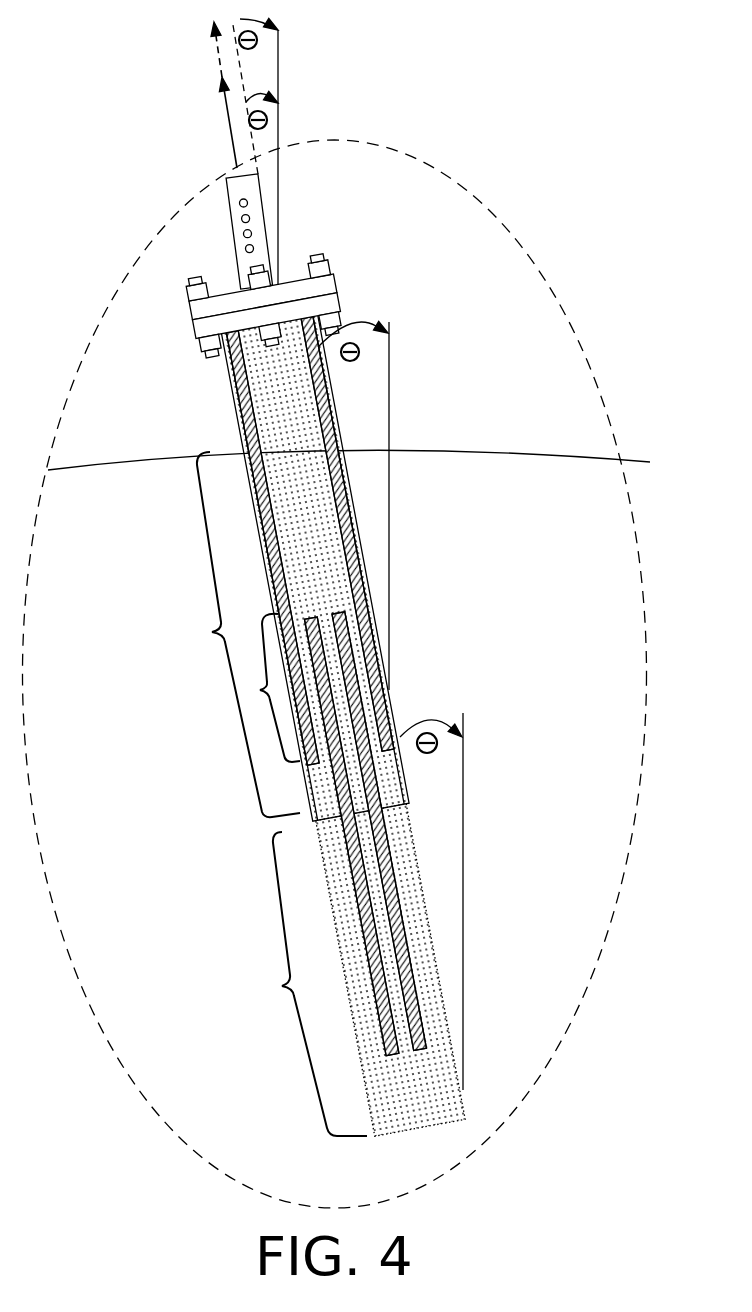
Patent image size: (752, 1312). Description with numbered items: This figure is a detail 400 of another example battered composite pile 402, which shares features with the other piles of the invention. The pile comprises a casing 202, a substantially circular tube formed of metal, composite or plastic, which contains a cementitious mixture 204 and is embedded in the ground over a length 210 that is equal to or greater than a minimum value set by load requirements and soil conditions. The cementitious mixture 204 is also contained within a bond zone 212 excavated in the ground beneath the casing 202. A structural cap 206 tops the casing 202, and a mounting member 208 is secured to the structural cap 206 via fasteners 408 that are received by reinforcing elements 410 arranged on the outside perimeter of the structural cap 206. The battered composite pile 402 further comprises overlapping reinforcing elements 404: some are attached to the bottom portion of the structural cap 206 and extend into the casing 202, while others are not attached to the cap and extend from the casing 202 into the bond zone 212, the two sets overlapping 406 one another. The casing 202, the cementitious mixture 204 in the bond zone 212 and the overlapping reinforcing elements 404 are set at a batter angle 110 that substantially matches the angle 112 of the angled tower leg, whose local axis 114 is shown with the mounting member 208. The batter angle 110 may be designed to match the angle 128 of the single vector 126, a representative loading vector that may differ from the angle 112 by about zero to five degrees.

The batter angle 110 is at (354, 324).
The angle of angled tower leg 112 is at (240, 19).
The local axis 114 is at (218, 50).
The single vector 126 is at (226, 104).
The angle of the single vector 128 is at (280, 92).
The casing 202 is at (228, 358).
The cementitious mixture 204 is at (262, 367).
The structural cap 206 is at (193, 328).
The mounting member 208 is at (229, 208).
The length 210 is at (214, 633).
The bond zone 212 is at (283, 987).
The detail 400 is at (524, 257).
The battered composite pile 402 is at (316, 226).
The reinforcing elements 404 is at (244, 396).
The overlapping 406 is at (262, 690).
The fasteners 408 is at (254, 281).
The reinforcing elements 410 is at (255, 265).